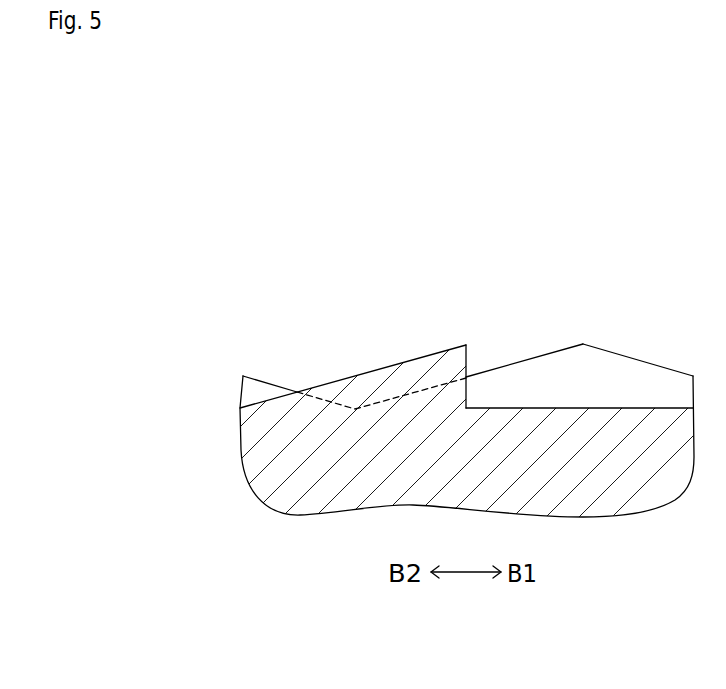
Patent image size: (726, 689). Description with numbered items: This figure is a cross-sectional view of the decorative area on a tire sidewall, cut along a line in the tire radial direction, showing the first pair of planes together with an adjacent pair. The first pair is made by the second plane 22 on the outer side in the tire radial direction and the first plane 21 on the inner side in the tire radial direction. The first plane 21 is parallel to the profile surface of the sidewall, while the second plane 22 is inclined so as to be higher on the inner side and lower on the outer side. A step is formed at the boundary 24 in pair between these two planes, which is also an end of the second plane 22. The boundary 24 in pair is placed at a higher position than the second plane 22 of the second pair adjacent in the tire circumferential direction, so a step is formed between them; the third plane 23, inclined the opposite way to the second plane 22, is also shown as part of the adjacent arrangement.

The first plane 21 is at (573, 407).
The second plane 22 is at (340, 378).
The third plane 23 is at (264, 378).
The boundary in pair 24 is at (470, 342).